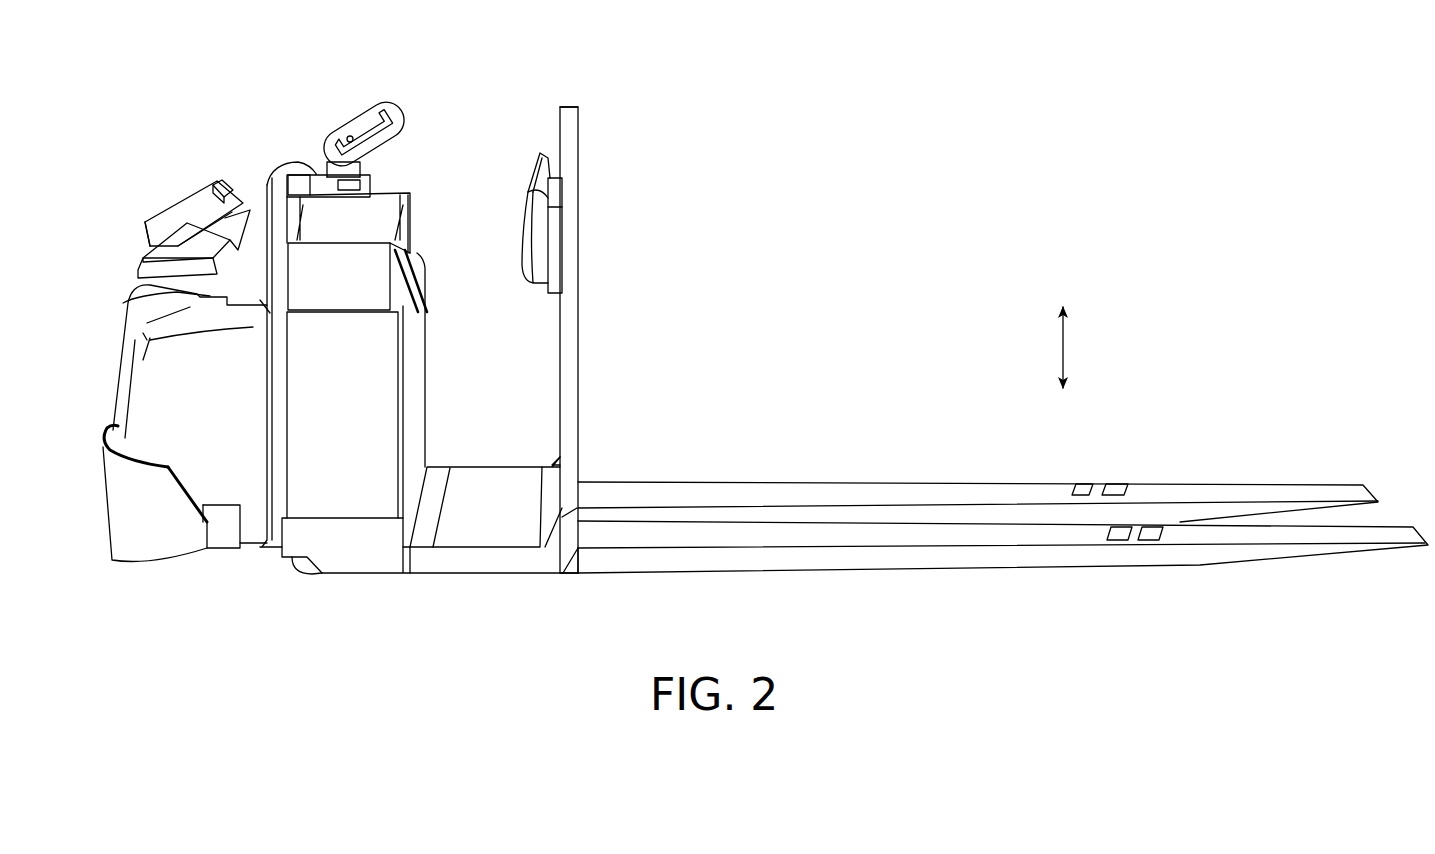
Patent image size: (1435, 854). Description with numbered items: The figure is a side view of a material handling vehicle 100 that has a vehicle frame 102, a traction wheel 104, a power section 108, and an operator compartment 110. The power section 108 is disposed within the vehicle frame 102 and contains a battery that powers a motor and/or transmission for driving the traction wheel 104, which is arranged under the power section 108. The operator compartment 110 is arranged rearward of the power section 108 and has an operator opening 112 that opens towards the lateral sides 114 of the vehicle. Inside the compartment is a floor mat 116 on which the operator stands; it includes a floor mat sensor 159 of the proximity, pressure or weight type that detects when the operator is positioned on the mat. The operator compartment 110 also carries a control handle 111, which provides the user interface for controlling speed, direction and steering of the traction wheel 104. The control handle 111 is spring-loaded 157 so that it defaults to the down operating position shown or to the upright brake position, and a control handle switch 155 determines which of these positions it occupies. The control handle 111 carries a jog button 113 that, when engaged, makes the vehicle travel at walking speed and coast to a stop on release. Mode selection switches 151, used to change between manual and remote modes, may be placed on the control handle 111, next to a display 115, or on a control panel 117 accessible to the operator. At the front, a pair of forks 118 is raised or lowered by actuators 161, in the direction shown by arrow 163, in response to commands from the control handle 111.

The material handling vehicle 100 is at (878, 146).
The vehicle frame 102 is at (612, 130).
The traction wheel 104 is at (123, 564).
The power section 108 is at (110, 372).
The operator compartment 110 is at (542, 344).
The control handle 111 is at (395, 110).
The operator opening 112 is at (572, 367).
The jog button 113 is at (349, 136).
The lateral sides 114 is at (360, 487).
The display 115 is at (206, 190).
The floor mat 116 is at (522, 535).
The control panel 117 is at (225, 186).
The forks 118 is at (1283, 535).
The mode selection switches 151 is at (287, 187).
The control handle switch 155 is at (372, 154).
The spring-loaded 157 is at (362, 186).
The floor mat sensor 159 is at (462, 533).
The actuators 161 is at (625, 601).
The arrow 163 is at (1063, 348).